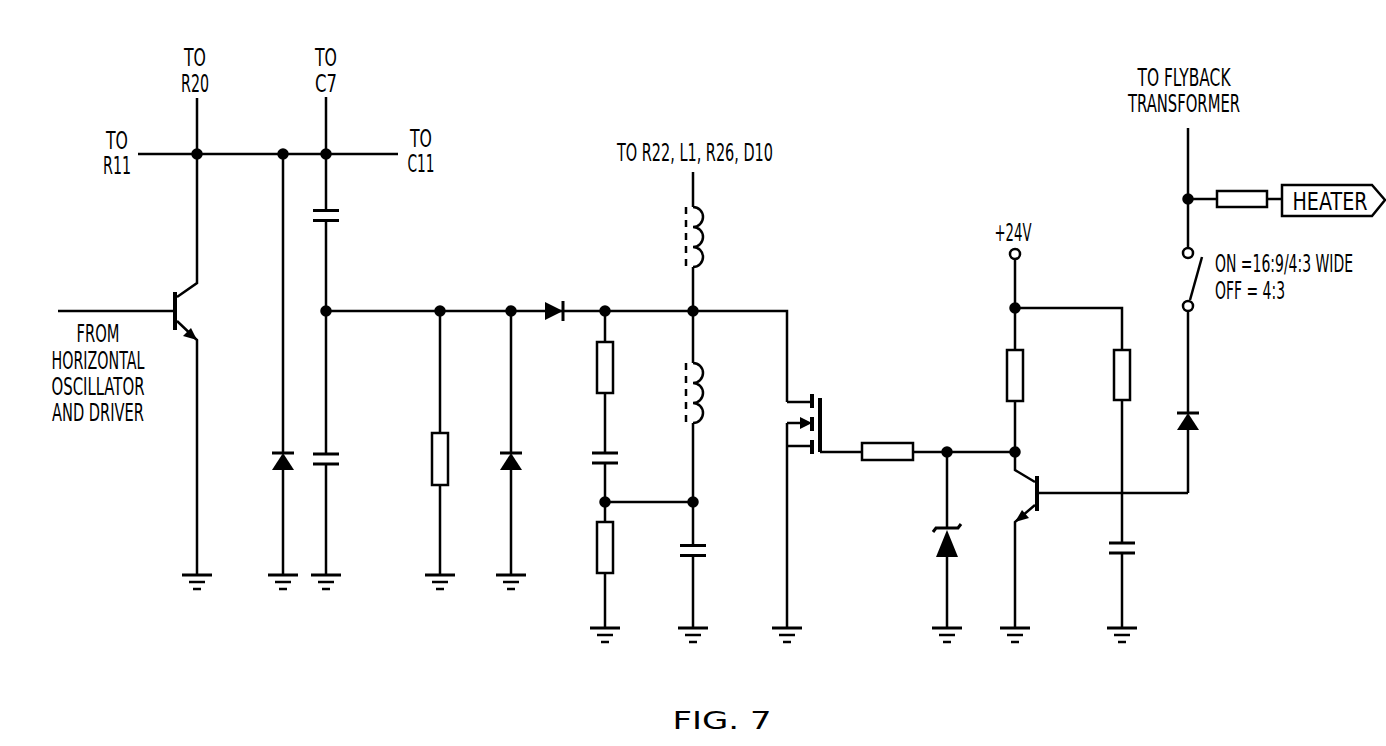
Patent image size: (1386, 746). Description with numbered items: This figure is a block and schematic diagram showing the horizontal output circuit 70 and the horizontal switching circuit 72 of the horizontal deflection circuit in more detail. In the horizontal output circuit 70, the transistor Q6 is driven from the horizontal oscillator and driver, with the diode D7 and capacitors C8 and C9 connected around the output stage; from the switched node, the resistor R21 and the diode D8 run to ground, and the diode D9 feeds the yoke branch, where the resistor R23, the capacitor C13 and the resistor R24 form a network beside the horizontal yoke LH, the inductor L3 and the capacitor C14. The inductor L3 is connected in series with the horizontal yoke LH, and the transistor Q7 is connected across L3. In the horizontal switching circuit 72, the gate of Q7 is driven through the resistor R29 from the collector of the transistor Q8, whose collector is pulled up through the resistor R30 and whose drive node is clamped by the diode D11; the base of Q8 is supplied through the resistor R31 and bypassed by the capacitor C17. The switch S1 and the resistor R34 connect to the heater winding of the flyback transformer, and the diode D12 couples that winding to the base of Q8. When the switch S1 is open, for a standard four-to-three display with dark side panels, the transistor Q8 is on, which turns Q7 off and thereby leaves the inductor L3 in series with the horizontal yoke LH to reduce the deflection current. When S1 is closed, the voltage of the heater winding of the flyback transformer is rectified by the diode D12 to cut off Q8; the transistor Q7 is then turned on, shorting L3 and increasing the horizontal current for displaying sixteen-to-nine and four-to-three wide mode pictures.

The horizontal output circuit 70 is at (372, 296).
The horizontal switching circuit 72 is at (888, 325).
The transistor Q6 is at (153, 343).
The diode D7 is at (258, 371).
The capacitor C8 is at (345, 219).
The capacitor C9 is at (344, 512).
The resistor R21 is at (459, 450).
The diode D8 is at (536, 450).
The diode D9 is at (569, 281).
The resistor R23 is at (587, 382).
The capacitor C13 is at (623, 478).
The resistor R24 is at (591, 582).
The horizontal yoke LH is at (727, 241).
The inductor L3 is at (724, 406).
The capacitor C14 is at (712, 572).
The transistor Q7 is at (817, 489).
The resistor R29 is at (887, 423).
The diode D11 is at (930, 547).
The resistor R30 is at (995, 380).
The transistor Q8 is at (1078, 547).
The resistor R31 is at (1102, 446).
The capacitor C17 is at (1143, 582).
The diode D12 is at (1214, 402).
The switch S1 is at (1180, 279).
The resistor R34 is at (1235, 169).